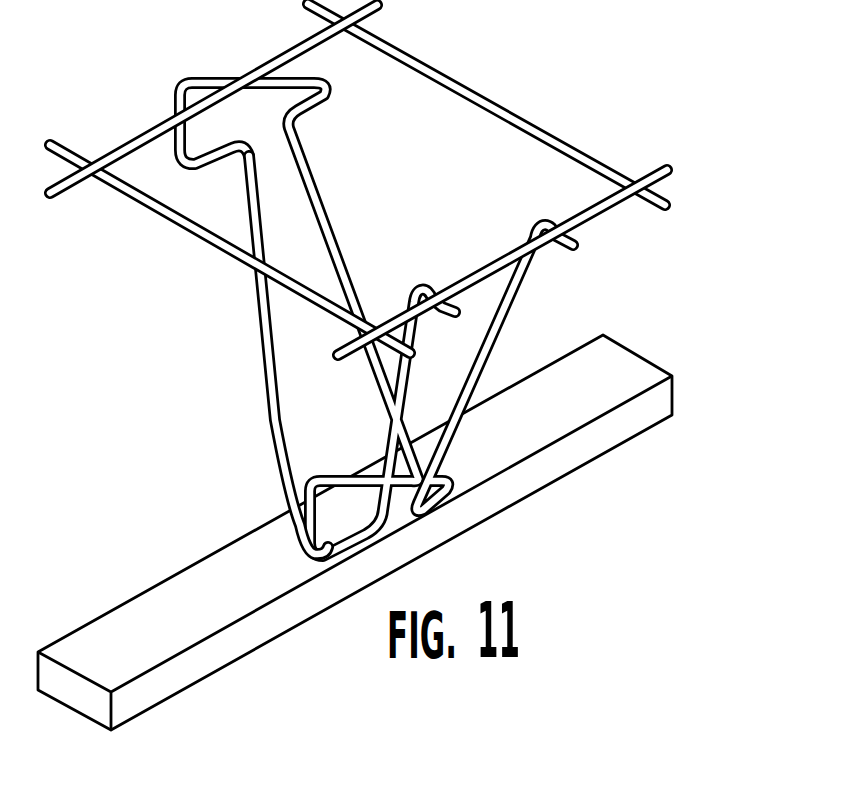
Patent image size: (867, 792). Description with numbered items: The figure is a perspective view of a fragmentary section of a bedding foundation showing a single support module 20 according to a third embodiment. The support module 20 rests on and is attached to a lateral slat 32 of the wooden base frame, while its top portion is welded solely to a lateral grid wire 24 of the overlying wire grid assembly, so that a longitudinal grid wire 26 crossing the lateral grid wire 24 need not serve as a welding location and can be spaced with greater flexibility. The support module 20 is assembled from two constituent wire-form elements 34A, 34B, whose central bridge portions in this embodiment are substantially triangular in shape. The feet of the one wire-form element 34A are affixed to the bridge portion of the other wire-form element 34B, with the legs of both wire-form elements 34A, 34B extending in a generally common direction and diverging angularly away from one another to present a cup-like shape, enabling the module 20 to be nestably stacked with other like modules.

The support module 20 is at (222, 359).
The lateral grid wire 24 is at (603, 208).
The longitudinal grid wire 26 is at (557, 143).
The lateral slat 32 is at (600, 435).
The wire-form element 34A is at (262, 419).
The wire-form element 34B is at (502, 328).